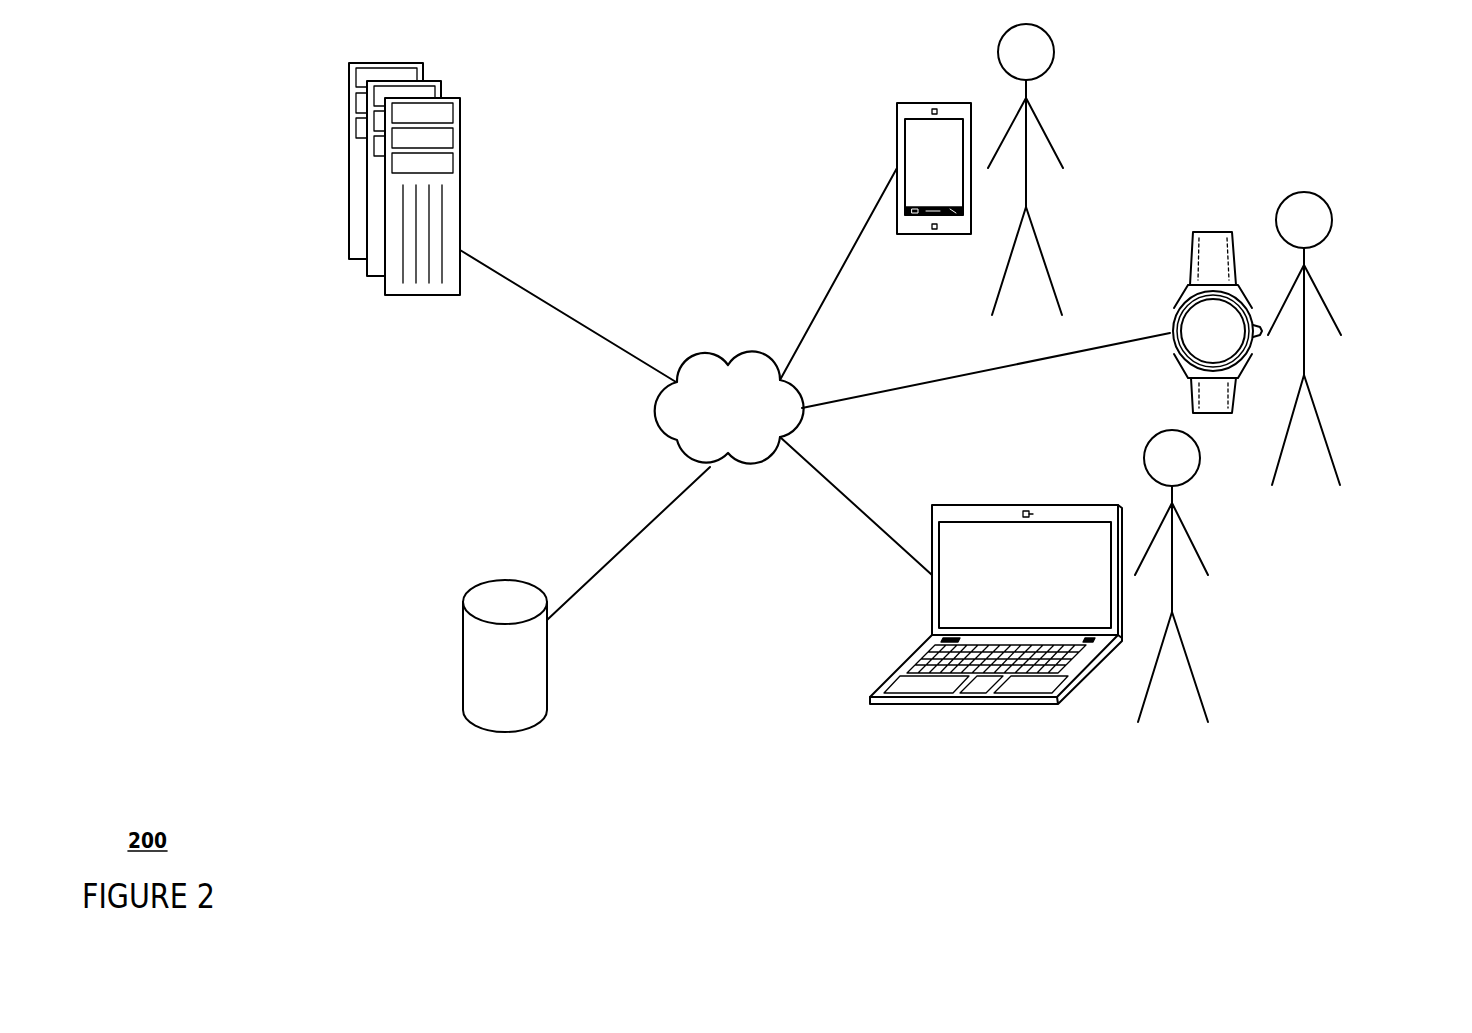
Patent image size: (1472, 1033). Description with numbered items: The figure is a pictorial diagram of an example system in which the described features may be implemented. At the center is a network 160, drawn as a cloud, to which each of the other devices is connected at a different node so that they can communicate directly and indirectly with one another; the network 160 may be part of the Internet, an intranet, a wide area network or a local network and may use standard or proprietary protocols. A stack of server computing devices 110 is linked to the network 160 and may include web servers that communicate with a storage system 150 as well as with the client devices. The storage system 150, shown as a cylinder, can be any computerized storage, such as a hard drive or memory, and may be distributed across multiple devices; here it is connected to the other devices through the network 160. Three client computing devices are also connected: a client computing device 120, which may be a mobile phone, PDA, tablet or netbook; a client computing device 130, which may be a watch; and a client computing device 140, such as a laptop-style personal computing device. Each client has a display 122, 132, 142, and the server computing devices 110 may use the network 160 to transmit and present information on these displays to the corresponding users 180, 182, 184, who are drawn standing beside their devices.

The server computing device 110 is at (460, 145).
The client computing device 120 is at (897, 133).
The display 122 is at (905, 162).
The client computing device 130 is at (1186, 287).
The display 132 is at (1178, 360).
The client computing device 140 is at (930, 578).
The display 142 is at (939, 617).
The storage system 150 is at (548, 673).
The network 160 is at (729, 407).
The user 180 is at (1060, 158).
The user 182 is at (1337, 325).
The user 184 is at (1205, 563).